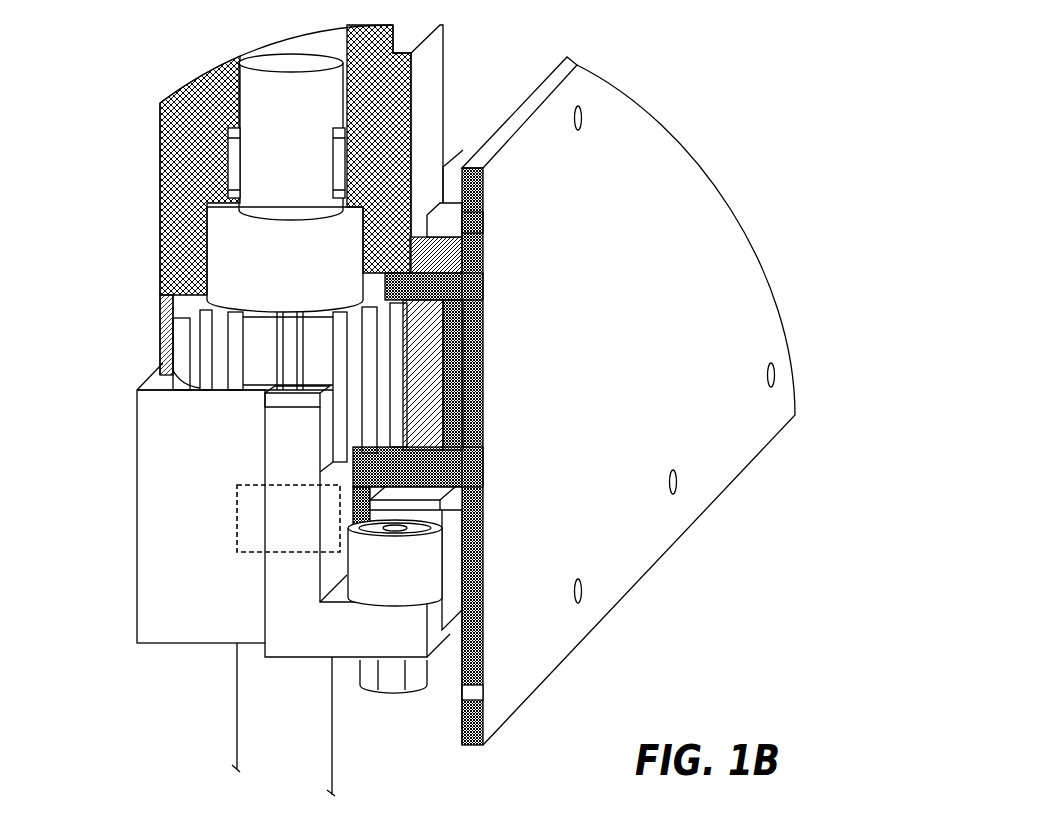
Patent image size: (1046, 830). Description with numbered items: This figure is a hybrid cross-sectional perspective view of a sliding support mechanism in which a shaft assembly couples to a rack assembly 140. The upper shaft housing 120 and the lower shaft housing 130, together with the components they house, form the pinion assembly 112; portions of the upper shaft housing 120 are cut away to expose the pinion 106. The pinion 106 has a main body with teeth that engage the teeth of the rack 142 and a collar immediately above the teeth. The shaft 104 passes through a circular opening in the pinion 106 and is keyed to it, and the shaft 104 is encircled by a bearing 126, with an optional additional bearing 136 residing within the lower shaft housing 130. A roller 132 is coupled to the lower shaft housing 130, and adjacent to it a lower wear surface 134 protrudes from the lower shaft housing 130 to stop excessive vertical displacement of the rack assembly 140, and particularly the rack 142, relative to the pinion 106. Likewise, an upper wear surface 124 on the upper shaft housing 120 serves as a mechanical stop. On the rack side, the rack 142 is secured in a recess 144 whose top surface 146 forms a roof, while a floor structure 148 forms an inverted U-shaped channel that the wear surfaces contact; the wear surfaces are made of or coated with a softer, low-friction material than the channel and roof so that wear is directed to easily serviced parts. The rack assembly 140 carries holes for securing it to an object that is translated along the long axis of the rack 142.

The shaft 104 is at (272, 149).
The pinion 106 is at (266, 366).
The pinion assembly 112 is at (124, 389).
The upper shaft housing 120 is at (179, 149).
The upper wear surface 124 is at (414, 258).
The bearing 126 is at (340, 165).
The lower shaft housing 130 is at (247, 436).
The roller 132 is at (371, 587).
The lower wear surface 134 is at (391, 508).
The bearing 136 is at (271, 530).
The rack assembly 140 is at (681, 302).
The rack 142 is at (430, 375).
The recess 144 is at (470, 398).
The top surface 146 is at (472, 252).
The floor structure 148 is at (466, 478).